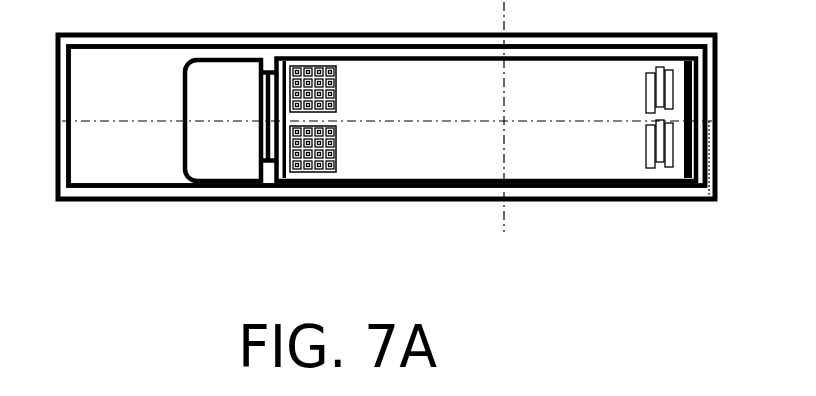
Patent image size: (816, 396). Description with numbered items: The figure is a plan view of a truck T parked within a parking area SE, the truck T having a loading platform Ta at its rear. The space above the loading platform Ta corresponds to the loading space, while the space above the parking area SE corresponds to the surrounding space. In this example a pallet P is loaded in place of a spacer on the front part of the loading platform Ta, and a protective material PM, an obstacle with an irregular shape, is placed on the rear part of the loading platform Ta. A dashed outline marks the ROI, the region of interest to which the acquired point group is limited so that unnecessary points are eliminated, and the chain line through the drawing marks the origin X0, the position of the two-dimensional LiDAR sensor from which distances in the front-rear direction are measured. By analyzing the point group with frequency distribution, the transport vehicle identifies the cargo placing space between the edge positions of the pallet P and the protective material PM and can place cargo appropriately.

The parking area SE is at (135, 98).
The region of interest ROI is at (143, 167).
The loading platform Ta is at (437, 105).
The truck T is at (205, 143).
The pallet P is at (315, 165).
The protective material PM is at (657, 153).
The origin X0 is at (506, 132).